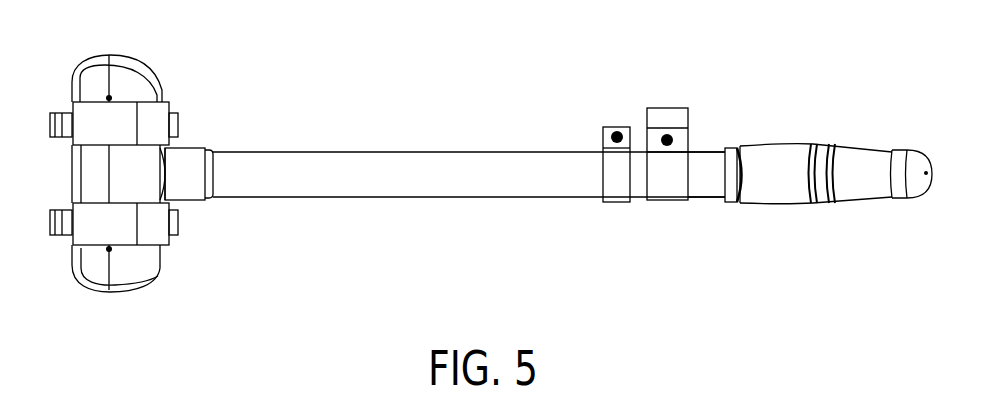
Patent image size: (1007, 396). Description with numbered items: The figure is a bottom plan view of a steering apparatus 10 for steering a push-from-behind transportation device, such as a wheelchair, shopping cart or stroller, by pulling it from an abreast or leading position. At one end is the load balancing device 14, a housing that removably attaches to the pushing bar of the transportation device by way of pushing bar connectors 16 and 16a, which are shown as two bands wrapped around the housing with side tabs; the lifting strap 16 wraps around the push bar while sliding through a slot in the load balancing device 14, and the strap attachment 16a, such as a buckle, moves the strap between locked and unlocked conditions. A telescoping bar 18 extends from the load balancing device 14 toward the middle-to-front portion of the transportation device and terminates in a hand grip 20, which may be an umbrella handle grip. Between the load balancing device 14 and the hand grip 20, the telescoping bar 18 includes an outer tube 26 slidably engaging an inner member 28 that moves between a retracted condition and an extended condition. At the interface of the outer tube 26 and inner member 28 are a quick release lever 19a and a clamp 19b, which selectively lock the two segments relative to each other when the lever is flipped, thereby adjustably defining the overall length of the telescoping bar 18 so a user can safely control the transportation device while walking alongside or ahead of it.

The steering apparatus 10 is at (836, 46).
The load balancing device 14 is at (97, 267).
The pushing bar connector (lifting strap) 16 is at (65, 117).
The strap attachment 16a is at (158, 233).
The telescoping bar 18 is at (312, 151).
The quick release lever 19a is at (663, 115).
The clamp 19b is at (617, 198).
The hand grip 20 is at (793, 188).
The outer tube 26 is at (358, 182).
The inner member 28 is at (700, 183).